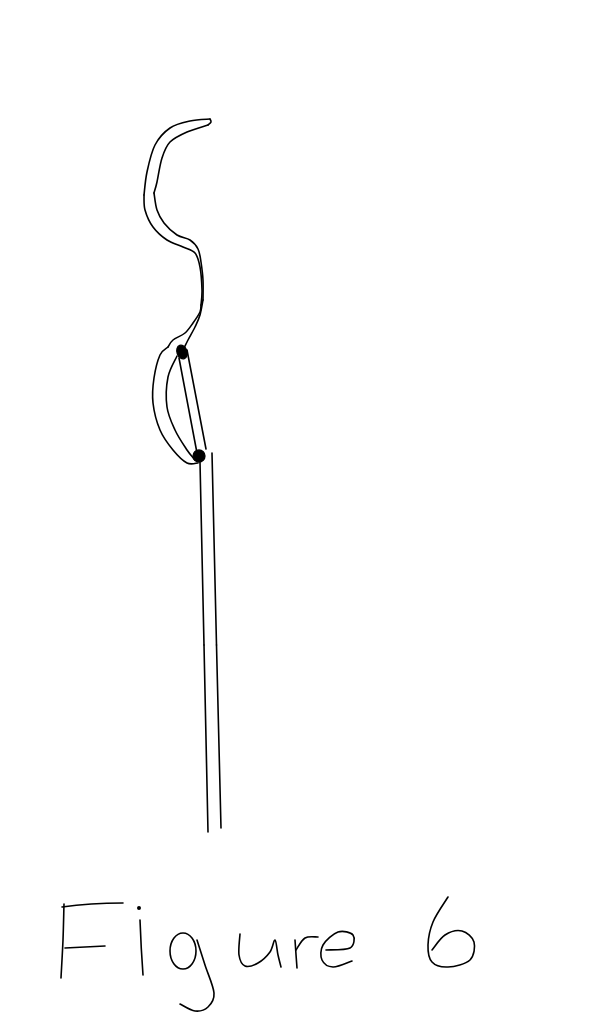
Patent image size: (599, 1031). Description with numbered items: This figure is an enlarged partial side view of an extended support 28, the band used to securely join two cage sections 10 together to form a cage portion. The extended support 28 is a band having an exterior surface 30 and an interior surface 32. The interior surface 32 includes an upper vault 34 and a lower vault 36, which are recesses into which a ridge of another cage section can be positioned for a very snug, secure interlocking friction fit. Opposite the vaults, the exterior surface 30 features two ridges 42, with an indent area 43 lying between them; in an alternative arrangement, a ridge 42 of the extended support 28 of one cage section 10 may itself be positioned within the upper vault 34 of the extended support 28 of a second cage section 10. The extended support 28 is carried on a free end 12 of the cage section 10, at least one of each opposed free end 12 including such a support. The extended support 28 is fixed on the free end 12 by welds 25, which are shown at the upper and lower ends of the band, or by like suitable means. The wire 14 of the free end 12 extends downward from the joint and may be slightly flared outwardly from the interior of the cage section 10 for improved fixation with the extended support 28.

The extended support 28 is at (170, 127).
The exterior surface 30 is at (150, 147).
The upper vault 34 is at (160, 168).
The interior surface 32 is at (198, 255).
The indent area 43 is at (195, 285).
The ridge 42 is at (143, 200).
The lower vault 36 is at (170, 402).
The free end 12 is at (203, 398).
The weld 25 is at (186, 346).
The cage section 10 is at (202, 590).
The wire 14 is at (203, 687).